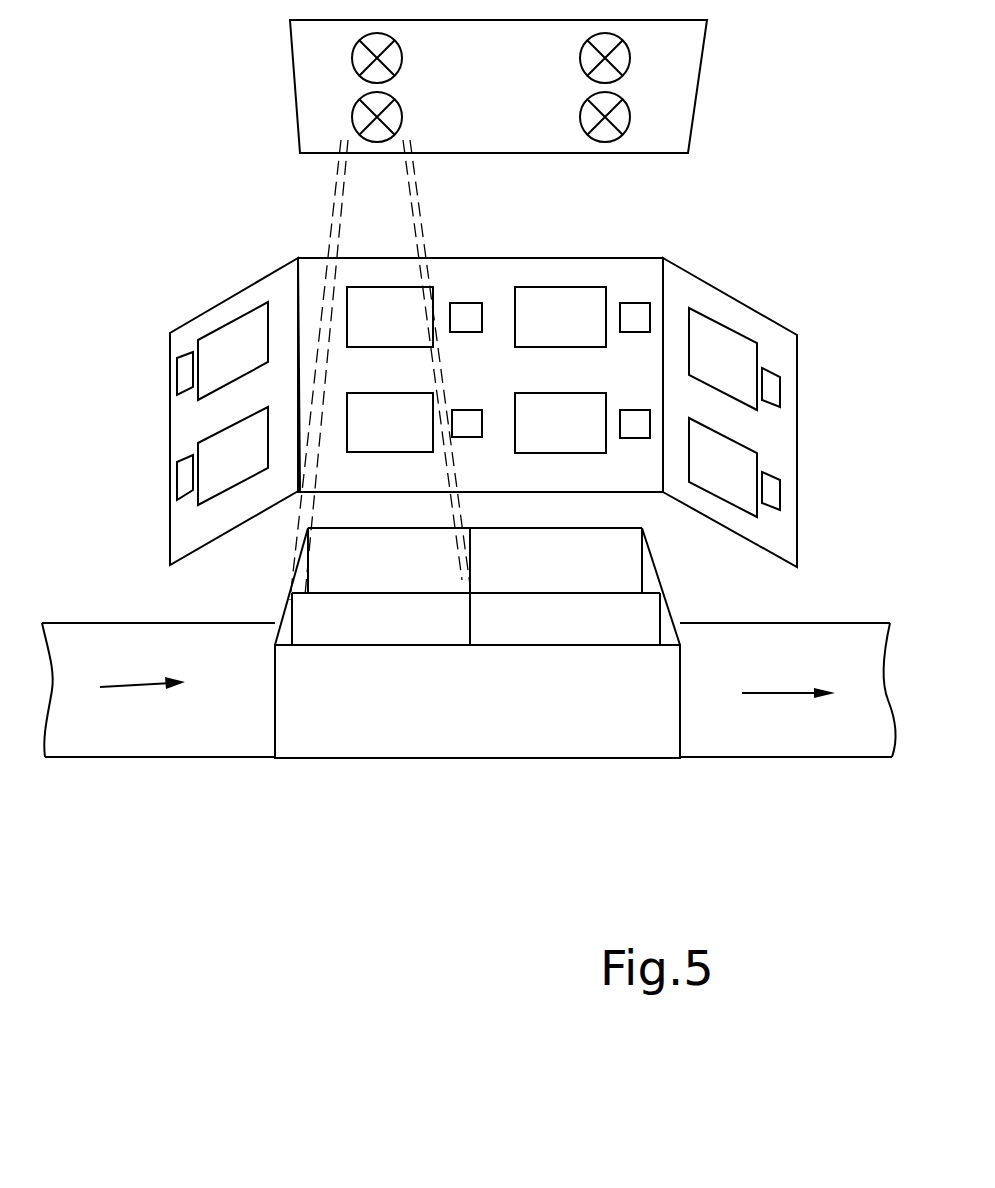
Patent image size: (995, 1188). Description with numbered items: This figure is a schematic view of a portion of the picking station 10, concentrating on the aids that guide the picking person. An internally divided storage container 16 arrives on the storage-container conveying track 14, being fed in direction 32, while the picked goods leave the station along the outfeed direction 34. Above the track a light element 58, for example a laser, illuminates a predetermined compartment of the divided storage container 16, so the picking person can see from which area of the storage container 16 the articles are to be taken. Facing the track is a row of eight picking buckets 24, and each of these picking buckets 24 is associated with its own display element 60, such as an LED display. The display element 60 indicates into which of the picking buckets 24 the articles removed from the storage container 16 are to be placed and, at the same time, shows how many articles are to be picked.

The picking station 10 is at (135, 225).
The storage-container conveying track 14 is at (790, 757).
The storage container 16 is at (532, 727).
The picking bucket 24 is at (242, 365).
The direction 32 is at (131, 680).
The outfeed direction 34 is at (762, 692).
The light element 58 is at (390, 95).
The display element 60 is at (630, 300).